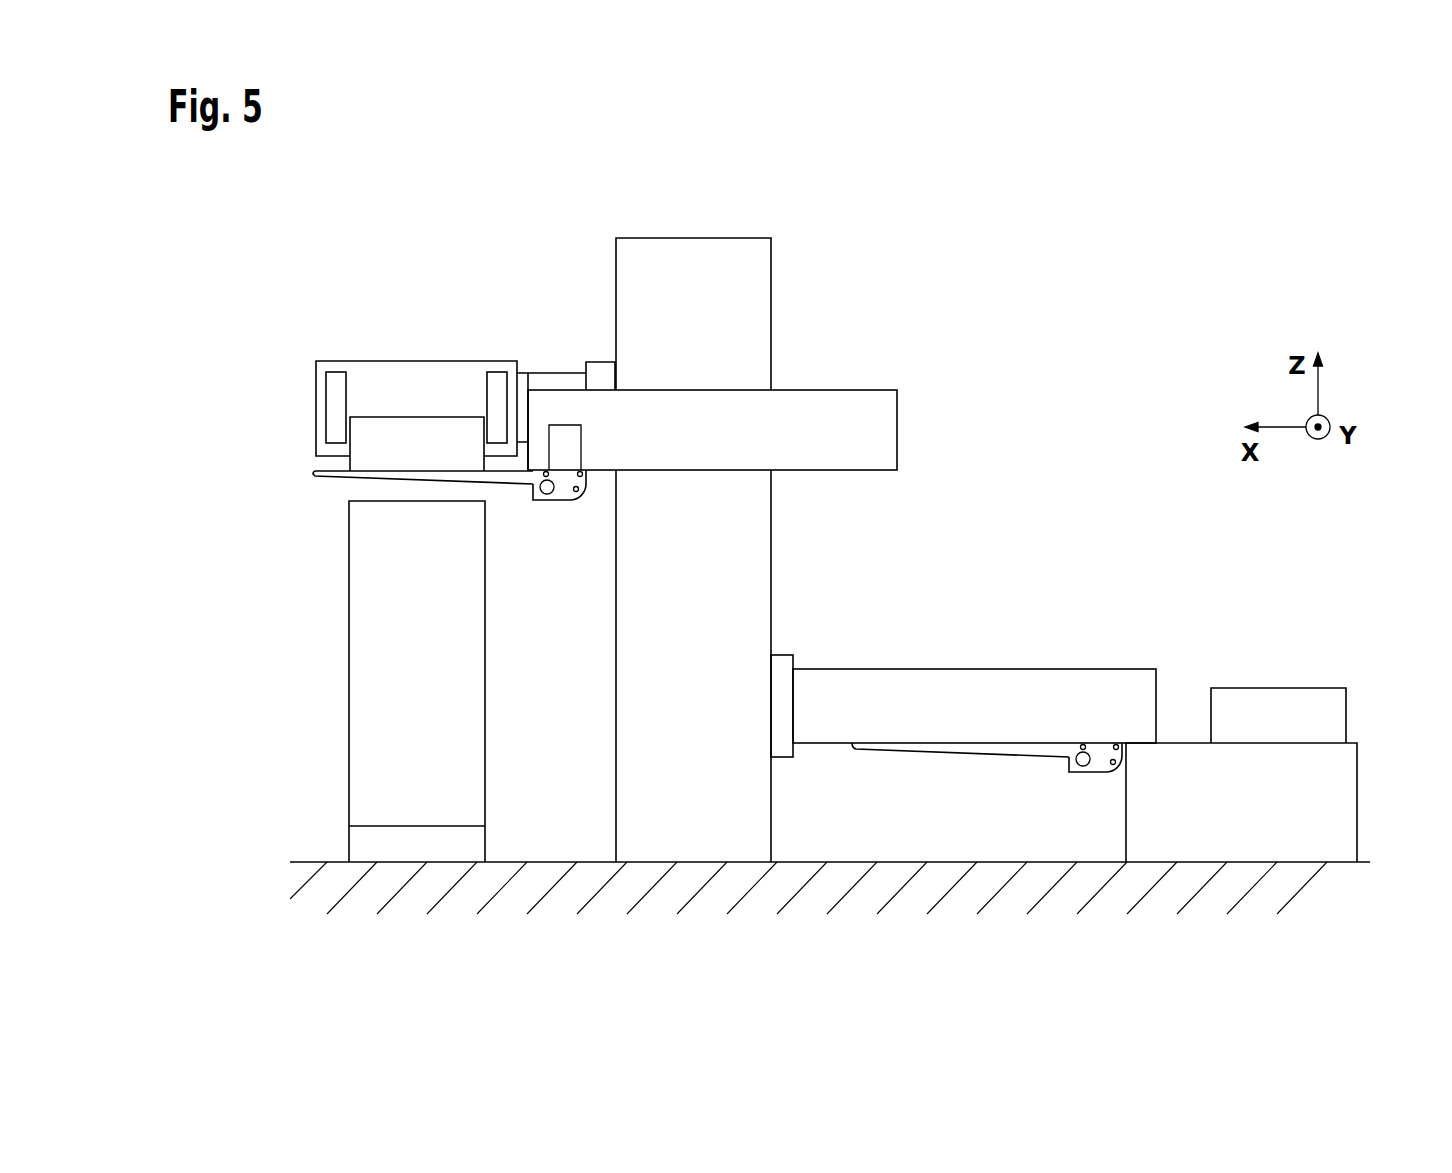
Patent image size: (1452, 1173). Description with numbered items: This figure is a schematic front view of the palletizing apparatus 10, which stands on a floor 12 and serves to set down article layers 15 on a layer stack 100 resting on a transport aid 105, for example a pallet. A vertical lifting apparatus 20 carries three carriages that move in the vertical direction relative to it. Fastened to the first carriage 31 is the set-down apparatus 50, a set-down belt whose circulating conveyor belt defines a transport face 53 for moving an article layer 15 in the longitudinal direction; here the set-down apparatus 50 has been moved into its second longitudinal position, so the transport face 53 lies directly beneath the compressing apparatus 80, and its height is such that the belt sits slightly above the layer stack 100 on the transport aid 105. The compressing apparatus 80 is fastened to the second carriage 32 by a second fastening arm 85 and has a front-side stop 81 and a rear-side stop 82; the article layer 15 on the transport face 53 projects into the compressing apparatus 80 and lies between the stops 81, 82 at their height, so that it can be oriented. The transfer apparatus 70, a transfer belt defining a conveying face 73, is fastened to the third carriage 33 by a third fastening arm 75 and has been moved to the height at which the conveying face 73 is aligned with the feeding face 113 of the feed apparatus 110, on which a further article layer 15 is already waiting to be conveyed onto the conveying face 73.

The palletizing apparatus 10 is at (1042, 255).
The floor 12 is at (555, 862).
The article layer 15 is at (415, 428).
The lifting apparatus 20 is at (693, 823).
The first carriage 31 is at (853, 408).
The second carriage 32 is at (602, 375).
The third carriage 33 is at (782, 667).
The set-down apparatus 50 is at (425, 475).
The transport face 53 is at (395, 452).
The transfer apparatus 70 is at (1003, 748).
The conveying face 73 is at (1045, 722).
The third fastening arm 75 is at (915, 685).
The compressing apparatus 80 is at (463, 390).
The front-side stop 81 is at (334, 384).
The rear-side stop 82 is at (500, 383).
The second fastening arm 85 is at (547, 383).
The layer stack 100 is at (363, 610).
The transport aid 105 is at (360, 843).
The feed apparatus 110 is at (1183, 767).
The feeding face 113 is at (1275, 723).